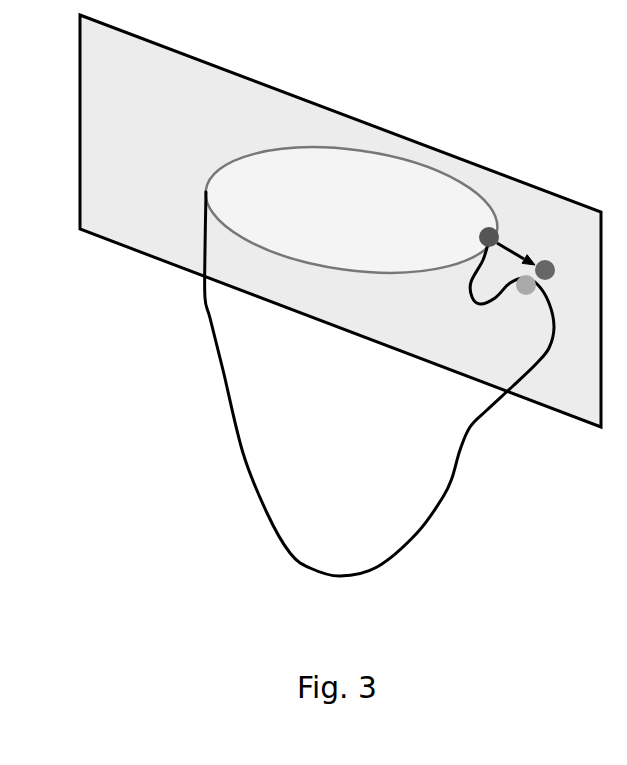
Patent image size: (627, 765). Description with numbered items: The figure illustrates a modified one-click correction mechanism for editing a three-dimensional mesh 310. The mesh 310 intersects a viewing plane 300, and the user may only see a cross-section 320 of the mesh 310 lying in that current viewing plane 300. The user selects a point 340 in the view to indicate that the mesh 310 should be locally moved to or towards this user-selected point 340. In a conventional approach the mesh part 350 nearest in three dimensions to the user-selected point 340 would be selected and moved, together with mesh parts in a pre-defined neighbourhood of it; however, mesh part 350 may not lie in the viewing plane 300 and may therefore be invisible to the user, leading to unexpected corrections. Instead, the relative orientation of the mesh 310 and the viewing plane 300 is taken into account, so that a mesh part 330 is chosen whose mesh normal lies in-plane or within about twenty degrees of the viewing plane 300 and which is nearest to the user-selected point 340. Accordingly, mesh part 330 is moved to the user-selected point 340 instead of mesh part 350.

The viewing plane 300 is at (548, 408).
The mesh 310 is at (410, 547).
The cross-section 320 is at (395, 273).
The mesh part 330 is at (494, 230).
The user-selected point 340 is at (545, 258).
The mesh part 350 is at (522, 297).